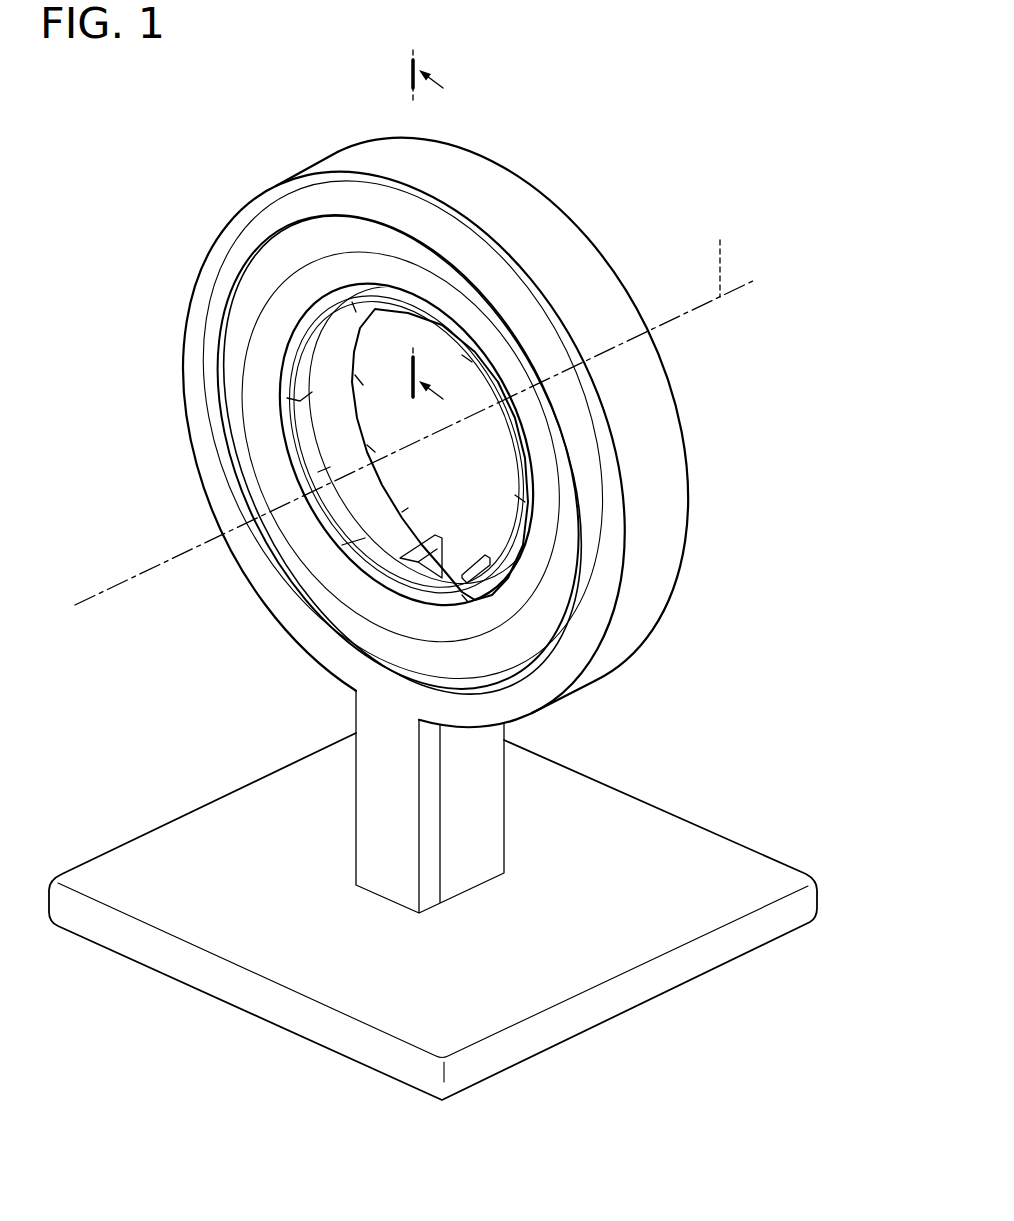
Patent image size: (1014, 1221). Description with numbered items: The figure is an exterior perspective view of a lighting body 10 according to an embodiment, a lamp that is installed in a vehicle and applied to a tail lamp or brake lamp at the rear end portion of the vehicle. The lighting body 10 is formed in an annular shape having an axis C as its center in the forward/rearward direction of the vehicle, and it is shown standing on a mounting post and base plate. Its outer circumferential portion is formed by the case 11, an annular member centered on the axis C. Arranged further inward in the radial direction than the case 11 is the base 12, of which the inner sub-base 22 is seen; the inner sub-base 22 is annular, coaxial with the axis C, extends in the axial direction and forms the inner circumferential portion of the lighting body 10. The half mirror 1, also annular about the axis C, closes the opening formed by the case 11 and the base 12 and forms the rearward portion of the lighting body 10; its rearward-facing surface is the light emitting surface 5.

The lighting body 10 is at (603, 144).
The case 11 is at (666, 544).
The half mirror 1 is at (278, 257).
The light emitting surface 5 is at (252, 309).
The inner sub-base 22 is at (330, 436).
The base 12 is at (300, 452).